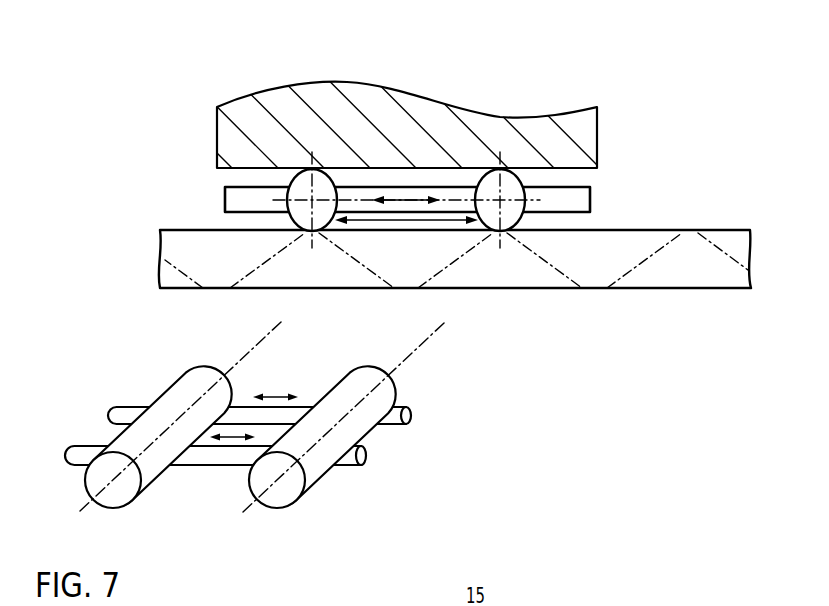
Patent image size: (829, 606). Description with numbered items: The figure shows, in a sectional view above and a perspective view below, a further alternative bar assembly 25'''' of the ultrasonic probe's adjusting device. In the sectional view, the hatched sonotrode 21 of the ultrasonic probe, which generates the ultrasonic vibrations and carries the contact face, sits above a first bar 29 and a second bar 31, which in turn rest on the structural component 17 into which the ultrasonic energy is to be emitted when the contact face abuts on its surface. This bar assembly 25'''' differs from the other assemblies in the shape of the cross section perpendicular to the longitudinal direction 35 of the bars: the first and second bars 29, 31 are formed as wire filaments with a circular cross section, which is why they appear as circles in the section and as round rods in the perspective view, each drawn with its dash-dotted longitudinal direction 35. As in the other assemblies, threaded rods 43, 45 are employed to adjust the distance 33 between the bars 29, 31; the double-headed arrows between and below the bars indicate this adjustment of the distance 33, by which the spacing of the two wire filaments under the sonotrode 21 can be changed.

The sonotrode 21 is at (282, 107).
The bar assembly 25'''' is at (627, 66).
The structural component 17 is at (700, 275).
The threaded rod 43 is at (448, 188).
The threaded rod 45 is at (590, 187).
The first bar 29 is at (293, 217).
The second bar 31 is at (512, 212).
The distance 33 is at (433, 226).
The longitudinal direction 35 is at (268, 333).